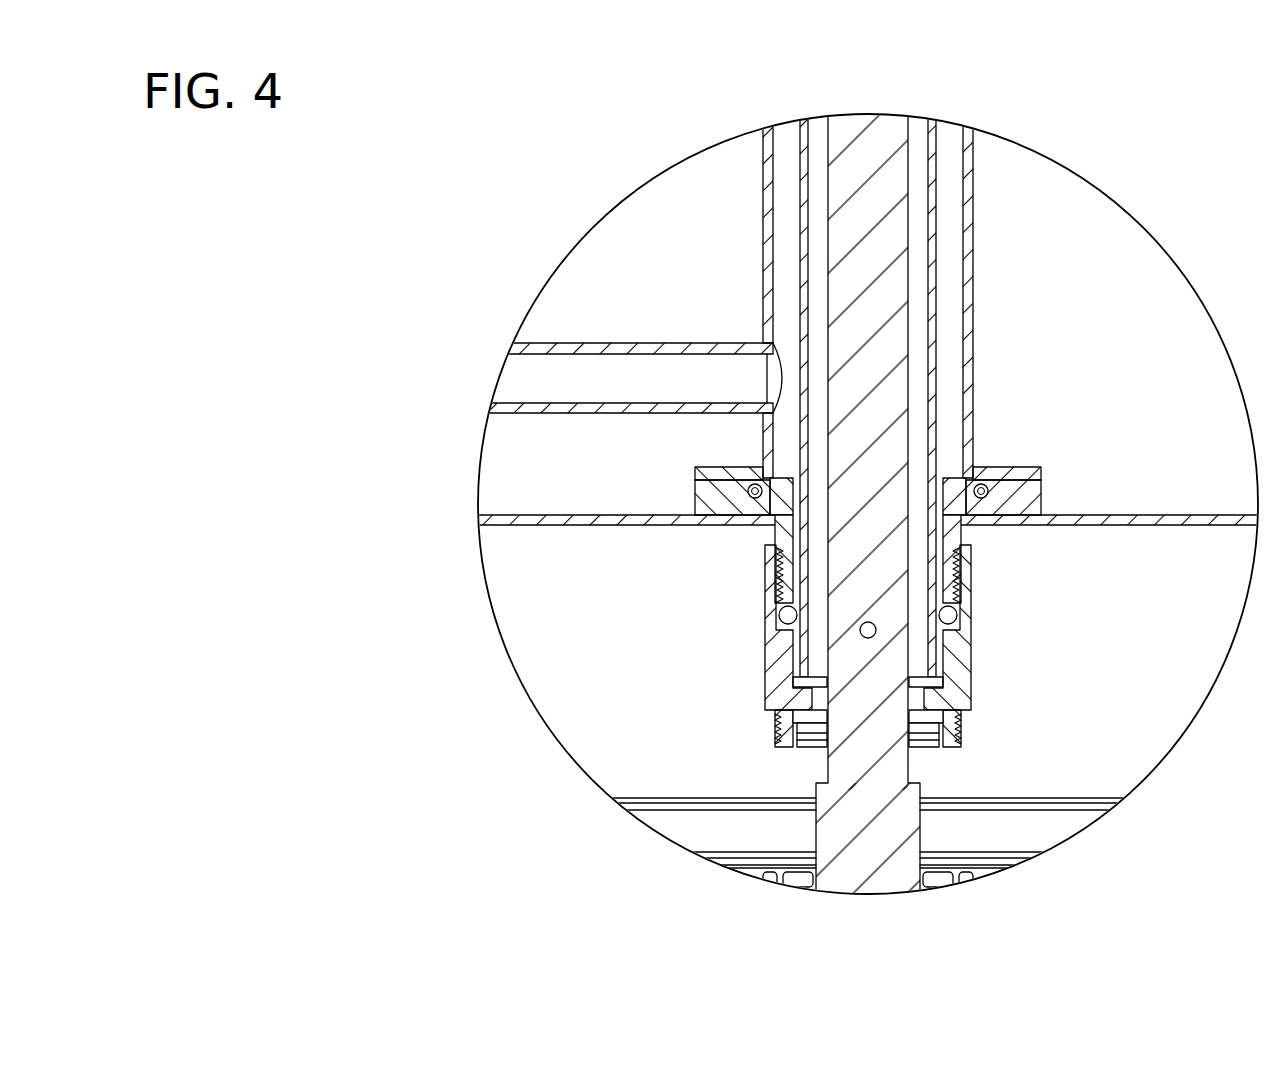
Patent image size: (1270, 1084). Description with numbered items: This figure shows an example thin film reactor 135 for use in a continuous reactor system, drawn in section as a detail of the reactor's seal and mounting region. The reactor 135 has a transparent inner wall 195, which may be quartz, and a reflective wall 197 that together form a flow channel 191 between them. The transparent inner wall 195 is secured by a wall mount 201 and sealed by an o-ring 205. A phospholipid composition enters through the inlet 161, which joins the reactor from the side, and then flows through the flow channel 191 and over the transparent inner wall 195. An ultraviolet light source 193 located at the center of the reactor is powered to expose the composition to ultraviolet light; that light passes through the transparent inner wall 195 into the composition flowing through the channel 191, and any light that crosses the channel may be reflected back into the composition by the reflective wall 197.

The thin film reactor 135 is at (1195, 170).
The inlet 161 is at (684, 373).
The flow channel 191 is at (782, 201).
The ultraviolet light source 193 is at (866, 728).
The transparent inner wall 195 is at (936, 218).
The reflective wall 197 is at (972, 266).
The wall mount 201 is at (958, 695).
The o-ring 205 is at (785, 620).